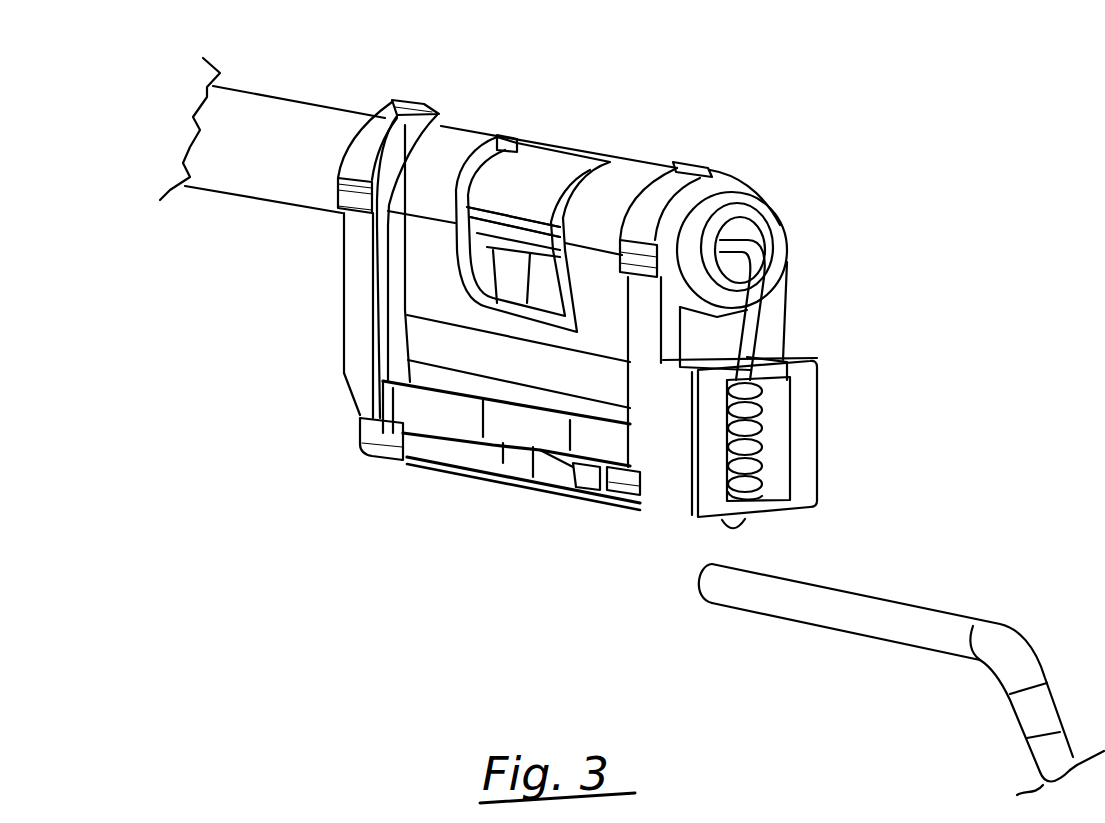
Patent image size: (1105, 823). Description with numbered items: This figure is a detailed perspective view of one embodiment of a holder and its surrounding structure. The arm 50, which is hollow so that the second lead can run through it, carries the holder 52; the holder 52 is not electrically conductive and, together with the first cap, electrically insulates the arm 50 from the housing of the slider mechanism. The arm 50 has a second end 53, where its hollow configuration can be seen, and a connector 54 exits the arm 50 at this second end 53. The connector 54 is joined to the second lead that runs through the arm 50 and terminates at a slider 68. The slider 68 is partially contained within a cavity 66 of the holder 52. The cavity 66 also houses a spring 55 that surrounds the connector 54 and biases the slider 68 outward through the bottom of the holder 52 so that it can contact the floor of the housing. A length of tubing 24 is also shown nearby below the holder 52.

The tubing 24 is at (947, 612).
The arm 50 is at (268, 95).
The holder 52 is at (652, 156).
The second end 53 is at (780, 230).
The connector 54 is at (762, 312).
The spring 55 is at (757, 403).
The cavity 66 is at (804, 419).
The slider 68 is at (753, 497).